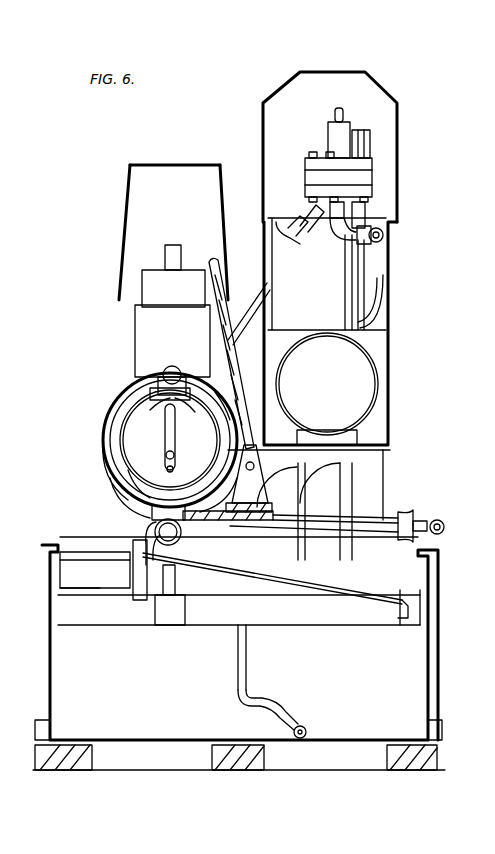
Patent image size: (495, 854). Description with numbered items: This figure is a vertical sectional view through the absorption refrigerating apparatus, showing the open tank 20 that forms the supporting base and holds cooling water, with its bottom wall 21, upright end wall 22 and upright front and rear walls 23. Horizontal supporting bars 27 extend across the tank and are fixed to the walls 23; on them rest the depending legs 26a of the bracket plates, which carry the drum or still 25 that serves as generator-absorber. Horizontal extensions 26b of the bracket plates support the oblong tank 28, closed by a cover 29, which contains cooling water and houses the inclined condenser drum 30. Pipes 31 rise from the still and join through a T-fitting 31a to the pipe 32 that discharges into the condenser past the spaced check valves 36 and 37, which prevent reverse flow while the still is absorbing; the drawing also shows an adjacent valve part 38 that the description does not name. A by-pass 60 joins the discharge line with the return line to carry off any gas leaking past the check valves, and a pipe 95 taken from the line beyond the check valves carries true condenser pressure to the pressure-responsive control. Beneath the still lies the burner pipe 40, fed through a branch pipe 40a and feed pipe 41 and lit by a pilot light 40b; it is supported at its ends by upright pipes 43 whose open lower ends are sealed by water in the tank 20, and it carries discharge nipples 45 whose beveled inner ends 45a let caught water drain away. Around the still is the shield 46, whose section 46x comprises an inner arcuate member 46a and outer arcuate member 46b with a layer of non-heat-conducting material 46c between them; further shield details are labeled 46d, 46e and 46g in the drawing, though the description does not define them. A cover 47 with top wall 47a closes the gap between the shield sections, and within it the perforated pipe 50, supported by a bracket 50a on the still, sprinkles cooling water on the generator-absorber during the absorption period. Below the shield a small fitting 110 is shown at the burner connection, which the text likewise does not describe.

The open tank 20 is at (48, 578).
The bottom wall 21 is at (153, 740).
The upright end wall 22 is at (198, 681).
The upright front and rear wall 23 is at (48, 646).
The drum or still 25 is at (118, 472).
The depending leg 26a is at (130, 578).
The horizontal extension 26b is at (345, 458).
The horizontal supporting bar 27 is at (90, 612).
The oblong tank 28 is at (390, 292).
The cover 29 is at (338, 72).
The drum 30 is at (376, 352).
The pipe 31 is at (383, 250).
The T-fitting 31a is at (372, 232).
The pipe 32 is at (368, 202).
The check valve 36 is at (330, 133).
The check valve 37 is at (367, 173).
The second valve cylinder 38 is at (368, 138).
The burner pipe 40 is at (228, 389).
The branch pipe 40a is at (275, 587).
The pilot light 40b is at (266, 500).
The feed pipe 41 is at (351, 522).
The upright pipe 43 is at (114, 280).
The discharge nipple 45 is at (132, 500).
The beveled end 45a is at (150, 540).
The shield 46 is at (104, 432).
The inner arcuate sheet metal member 46a is at (140, 458).
The outer arcuate sheet metal member 46b is at (103, 438).
The layer of non-heat conducting material 46c is at (106, 452).
The ring part 46d is at (192, 418).
The ring part 46e is at (241, 388).
The ring part 46g is at (165, 411).
The shield section 46x is at (130, 382).
The cover 47 is at (133, 334).
The top wall 47a is at (140, 300).
The perforated pipe 50 is at (175, 360).
The bracket 50a is at (172, 366).
The by-pass 60 is at (310, 230).
The pipe 95 is at (282, 228).
The swivel 110 is at (158, 530).